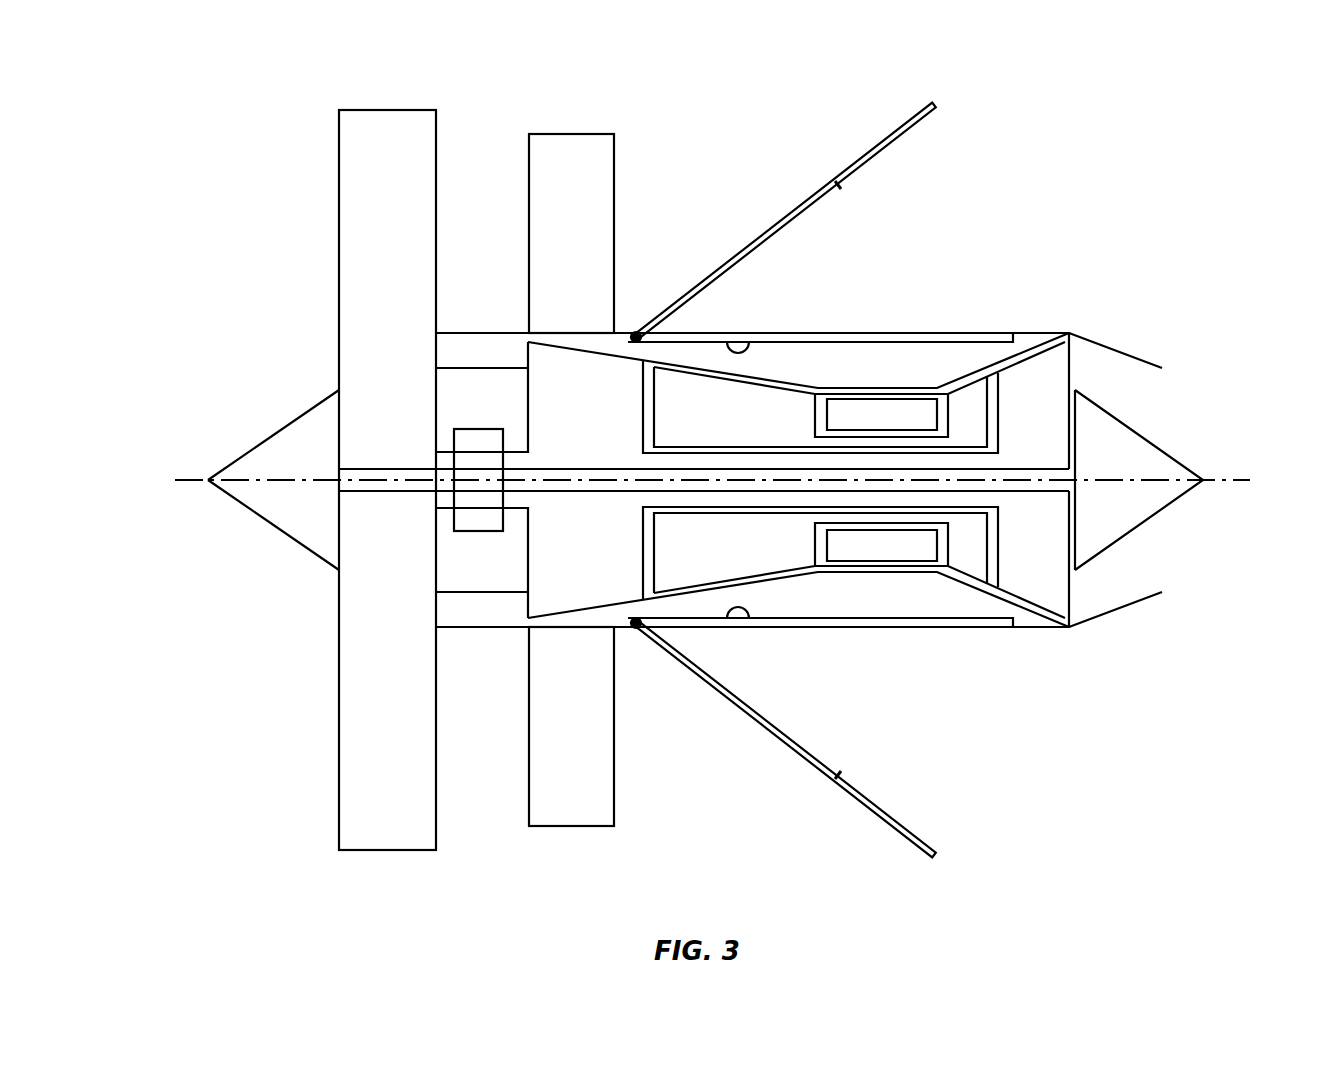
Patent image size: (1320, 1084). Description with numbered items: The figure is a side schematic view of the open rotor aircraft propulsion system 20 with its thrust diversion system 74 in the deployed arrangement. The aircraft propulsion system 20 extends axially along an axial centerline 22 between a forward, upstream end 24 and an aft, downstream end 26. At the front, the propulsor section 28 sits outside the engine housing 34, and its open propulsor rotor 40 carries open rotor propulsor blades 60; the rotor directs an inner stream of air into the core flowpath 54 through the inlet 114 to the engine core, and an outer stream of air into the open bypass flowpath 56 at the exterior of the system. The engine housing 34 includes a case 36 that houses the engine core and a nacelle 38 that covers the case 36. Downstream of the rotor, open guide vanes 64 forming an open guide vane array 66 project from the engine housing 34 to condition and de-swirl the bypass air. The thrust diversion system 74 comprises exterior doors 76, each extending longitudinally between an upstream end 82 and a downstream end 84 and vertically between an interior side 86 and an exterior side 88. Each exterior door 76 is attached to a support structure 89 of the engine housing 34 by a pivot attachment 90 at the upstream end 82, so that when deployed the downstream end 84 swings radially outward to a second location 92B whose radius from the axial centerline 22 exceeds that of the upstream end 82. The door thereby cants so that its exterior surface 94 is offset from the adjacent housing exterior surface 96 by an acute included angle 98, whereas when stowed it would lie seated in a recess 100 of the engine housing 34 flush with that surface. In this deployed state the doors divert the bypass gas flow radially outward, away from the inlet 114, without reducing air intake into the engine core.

The aircraft propulsion system 20 is at (218, 148).
The axial centerline 22 is at (1243, 483).
The upstream end 24 is at (208, 482).
The downstream end 26 is at (1213, 478).
The propulsor section 28 is at (332, 860).
The engine housing 34 is at (1058, 333).
The case 36 is at (784, 386).
The nacelle 38 is at (621, 333).
The open propulsor rotor 40 is at (330, 618).
The core flowpath 54 is at (460, 365).
The bypass flowpath 56 is at (457, 287).
The open rotor propulsor blades 60 is at (339, 185).
The open guide vanes 64 is at (623, 197).
The open guide vane array 66 is at (628, 157).
The thrust diversion system 74 is at (965, 230).
The exterior doors 76 is at (805, 180).
The upstream end 82 is at (636, 332).
The downstream end 84 is at (935, 104).
The interior side 86 is at (883, 153).
The exterior side 88 is at (868, 143).
The support structure 89 is at (751, 352).
The pivot attachment 90 is at (633, 341).
The second location 92B is at (932, 105).
The exterior surface 94 is at (775, 222).
The housing exterior surface 96 is at (1030, 332).
The included angle 98 is at (890, 332).
The recess 100 is at (958, 333).
The inlet 114 is at (436, 348).